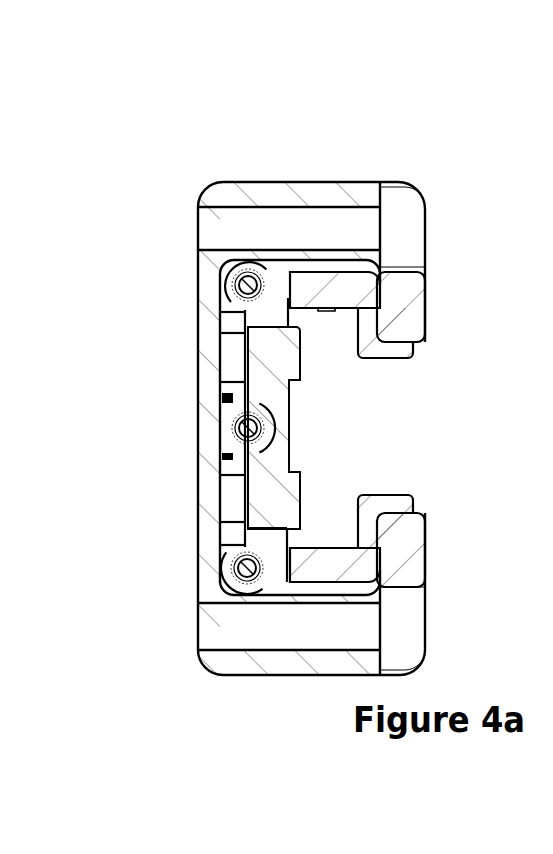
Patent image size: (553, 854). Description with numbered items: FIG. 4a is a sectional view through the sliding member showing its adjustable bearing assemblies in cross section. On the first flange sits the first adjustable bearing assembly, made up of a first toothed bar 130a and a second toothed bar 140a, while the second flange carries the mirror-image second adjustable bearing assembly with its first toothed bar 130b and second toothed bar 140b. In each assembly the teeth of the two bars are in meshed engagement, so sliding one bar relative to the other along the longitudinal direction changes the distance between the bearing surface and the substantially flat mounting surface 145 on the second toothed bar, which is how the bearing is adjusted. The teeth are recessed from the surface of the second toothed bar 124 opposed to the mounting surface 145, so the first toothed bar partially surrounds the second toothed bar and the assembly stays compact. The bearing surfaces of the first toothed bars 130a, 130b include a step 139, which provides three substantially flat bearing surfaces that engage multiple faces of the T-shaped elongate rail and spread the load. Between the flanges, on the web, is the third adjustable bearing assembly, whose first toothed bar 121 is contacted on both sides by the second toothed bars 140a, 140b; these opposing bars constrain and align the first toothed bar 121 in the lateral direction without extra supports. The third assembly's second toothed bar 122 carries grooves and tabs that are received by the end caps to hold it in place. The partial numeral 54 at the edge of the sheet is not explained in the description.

The first toothed bar of the third adjustable bearing assembly 121 is at (272, 357).
The second toothed bar of the third adjustable bearing assembly 122 is at (247, 384).
The second toothed bar 124 is at (272, 325).
The first toothed bar 130a is at (333, 288).
The first toothed bar 130b is at (335, 558).
The step 139 is at (365, 325).
The second toothed bar 140a is at (272, 284).
The second toothed bar 140b is at (272, 548).
The substantially flat mounting surface 145 is at (333, 288).
The partial numeral 54 is at (16, 538).